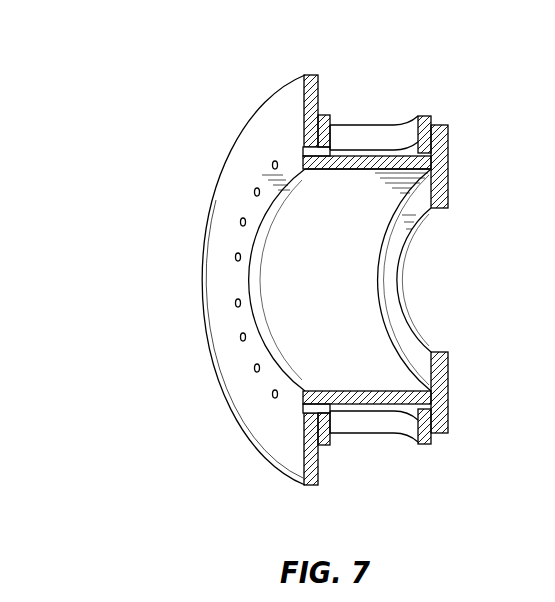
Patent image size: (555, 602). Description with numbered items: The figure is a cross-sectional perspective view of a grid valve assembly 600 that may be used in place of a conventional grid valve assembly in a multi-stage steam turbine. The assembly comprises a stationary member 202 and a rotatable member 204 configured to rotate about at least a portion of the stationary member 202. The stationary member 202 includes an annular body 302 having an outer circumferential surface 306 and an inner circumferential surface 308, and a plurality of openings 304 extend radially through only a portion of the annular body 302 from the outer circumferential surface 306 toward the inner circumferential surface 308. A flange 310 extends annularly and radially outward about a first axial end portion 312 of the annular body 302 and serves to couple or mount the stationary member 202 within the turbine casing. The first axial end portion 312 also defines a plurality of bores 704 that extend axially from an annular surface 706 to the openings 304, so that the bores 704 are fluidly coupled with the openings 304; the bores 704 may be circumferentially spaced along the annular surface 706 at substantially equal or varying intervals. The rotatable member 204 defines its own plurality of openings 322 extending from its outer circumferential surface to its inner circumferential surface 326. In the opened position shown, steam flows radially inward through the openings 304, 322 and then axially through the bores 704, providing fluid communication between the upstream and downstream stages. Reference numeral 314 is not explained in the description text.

The grid valve assembly 600 is at (124, 83).
The stationary member 202 is at (189, 315).
The rotatable member 204 is at (418, 110).
The annular body 302 is at (405, 370).
The openings 304 is at (420, 153).
The outer circumferential surface 306 is at (322, 135).
The inner circumferential surface 308 is at (283, 202).
The flange 310 is at (302, 105).
The first axial end portion 312 is at (306, 176).
The connector wall 314 is at (449, 128).
The openings 322 is at (428, 434).
The inner circumferential surface 326 is at (337, 415).
The bores 704 is at (241, 337).
The annular surface 706 is at (247, 423).